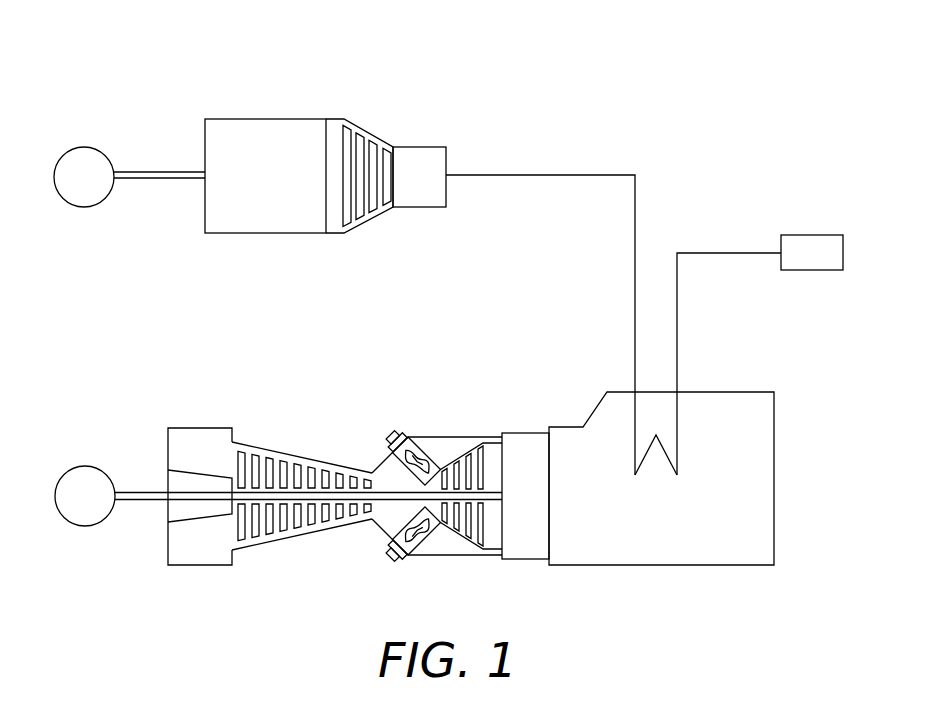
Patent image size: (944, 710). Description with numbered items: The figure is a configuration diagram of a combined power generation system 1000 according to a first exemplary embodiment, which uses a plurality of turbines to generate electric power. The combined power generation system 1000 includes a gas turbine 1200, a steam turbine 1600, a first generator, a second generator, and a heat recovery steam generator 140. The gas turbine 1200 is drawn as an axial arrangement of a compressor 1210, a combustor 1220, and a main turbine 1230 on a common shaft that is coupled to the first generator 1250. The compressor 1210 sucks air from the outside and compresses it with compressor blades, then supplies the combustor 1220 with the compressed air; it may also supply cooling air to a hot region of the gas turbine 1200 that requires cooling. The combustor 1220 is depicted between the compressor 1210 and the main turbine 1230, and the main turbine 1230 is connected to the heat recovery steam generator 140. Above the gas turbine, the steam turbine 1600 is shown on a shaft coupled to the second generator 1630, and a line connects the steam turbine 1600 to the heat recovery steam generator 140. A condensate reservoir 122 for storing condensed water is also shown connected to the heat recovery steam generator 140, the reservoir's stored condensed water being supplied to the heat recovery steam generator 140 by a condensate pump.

The combined power generation system 1000 is at (593, 46).
The steam turbine 1600 is at (358, 99).
The second generator 1630 is at (87, 147).
The condensate reservoir 122 is at (812, 235).
The heat recovery steam generator 140 is at (743, 386).
The gas turbine 1200 is at (332, 471).
The compressor 1210 is at (285, 542).
The combustor 1220 is at (413, 537).
The main turbine 1230 is at (493, 537).
The first generator 1250 is at (87, 466).